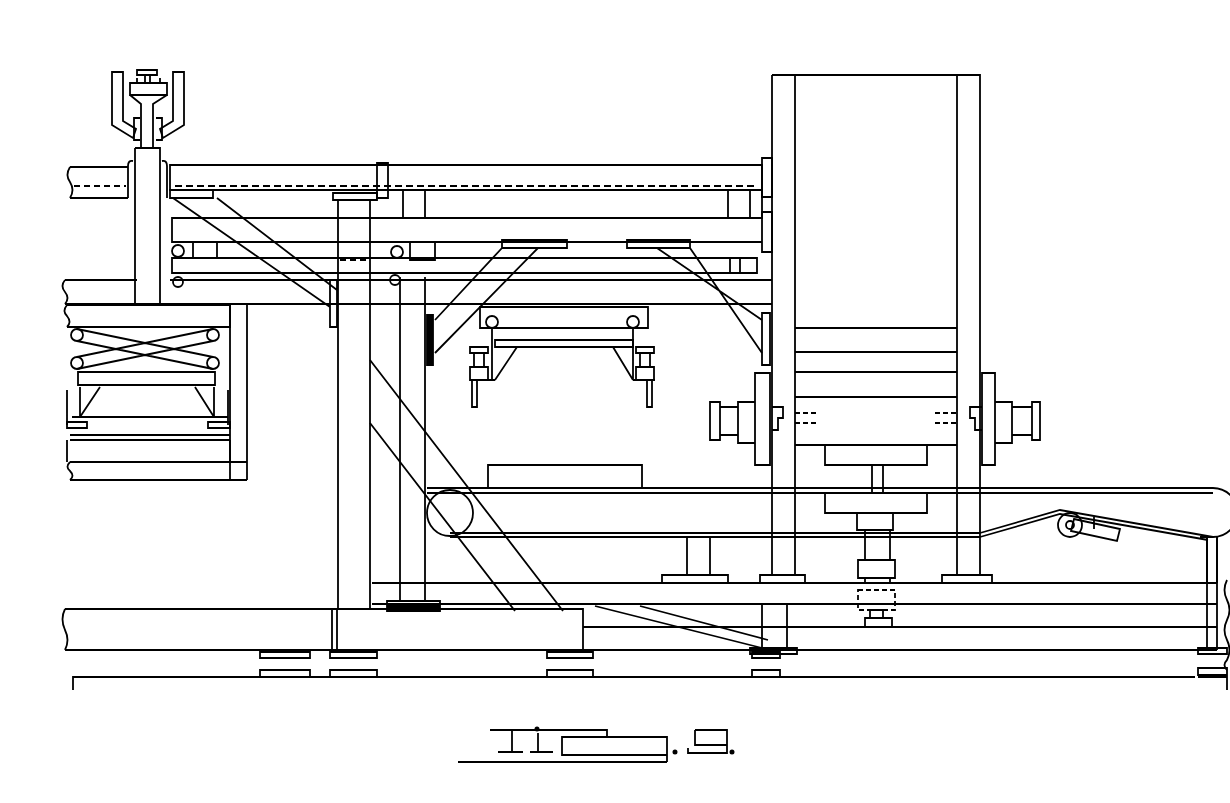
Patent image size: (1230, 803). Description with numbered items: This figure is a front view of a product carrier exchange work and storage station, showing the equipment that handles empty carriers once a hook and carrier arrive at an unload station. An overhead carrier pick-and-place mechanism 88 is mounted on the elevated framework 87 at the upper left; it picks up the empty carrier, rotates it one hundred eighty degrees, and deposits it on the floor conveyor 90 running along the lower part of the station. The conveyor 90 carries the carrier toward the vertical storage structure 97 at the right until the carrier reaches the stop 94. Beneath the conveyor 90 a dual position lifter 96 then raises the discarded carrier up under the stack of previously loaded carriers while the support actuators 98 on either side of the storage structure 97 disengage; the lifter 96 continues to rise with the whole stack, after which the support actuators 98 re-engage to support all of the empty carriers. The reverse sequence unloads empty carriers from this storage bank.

The overhead rail frame 87 is at (592, 122).
The overhead carrier pick-and-place mechanism 88 is at (201, 153).
The floor conveyor 90 is at (666, 486).
The stop 94 is at (976, 487).
The dual position lifter 96 is at (918, 468).
The machine frame 97 is at (1016, 327).
The support actuators 98 is at (706, 404).